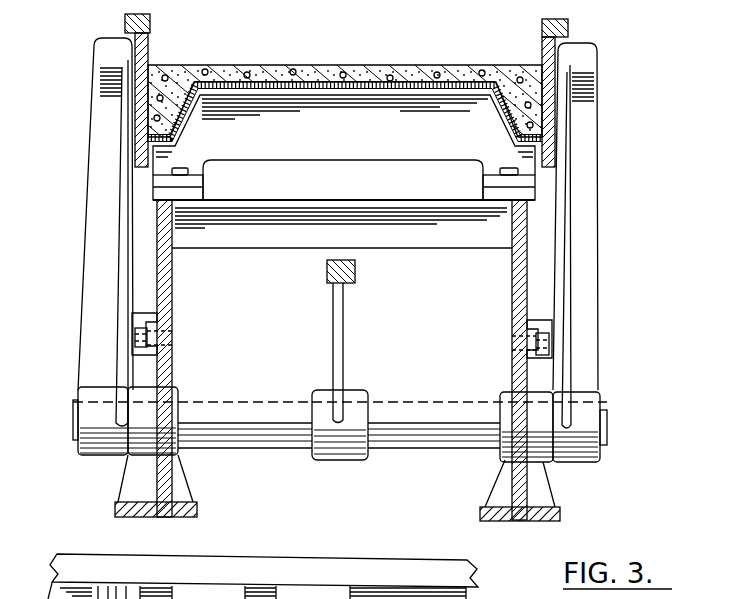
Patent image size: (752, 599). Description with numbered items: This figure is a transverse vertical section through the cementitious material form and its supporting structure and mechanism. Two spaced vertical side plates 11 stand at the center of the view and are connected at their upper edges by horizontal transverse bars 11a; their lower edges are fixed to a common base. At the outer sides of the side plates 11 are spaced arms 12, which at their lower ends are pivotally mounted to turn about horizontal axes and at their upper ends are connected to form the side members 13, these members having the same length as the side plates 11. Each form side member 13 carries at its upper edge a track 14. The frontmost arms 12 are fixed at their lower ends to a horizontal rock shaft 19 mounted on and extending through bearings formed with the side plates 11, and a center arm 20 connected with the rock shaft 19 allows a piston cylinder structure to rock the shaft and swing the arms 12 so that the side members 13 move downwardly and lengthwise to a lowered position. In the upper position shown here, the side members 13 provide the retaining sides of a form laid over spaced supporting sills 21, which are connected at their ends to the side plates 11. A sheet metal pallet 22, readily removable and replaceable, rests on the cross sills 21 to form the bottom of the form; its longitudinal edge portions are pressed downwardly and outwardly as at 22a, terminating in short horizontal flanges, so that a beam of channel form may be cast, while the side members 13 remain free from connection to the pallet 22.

The vertical side plates 11 is at (167, 285).
The horizontal transverse bars 11a is at (293, 230).
The spaced arms 12 is at (102, 230).
The form side members 13 is at (148, 50).
The track 14 is at (125, 22).
The horizontal rock shaft 19 is at (263, 430).
The center arm 20 is at (340, 338).
The supporting sills 21 is at (376, 142).
The sheet metal pallet 22 is at (346, 88).
The pressed edge portions of pallet 22a is at (170, 113).